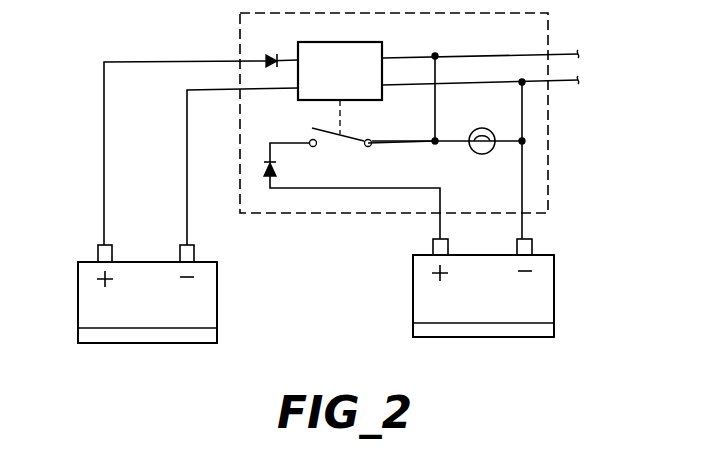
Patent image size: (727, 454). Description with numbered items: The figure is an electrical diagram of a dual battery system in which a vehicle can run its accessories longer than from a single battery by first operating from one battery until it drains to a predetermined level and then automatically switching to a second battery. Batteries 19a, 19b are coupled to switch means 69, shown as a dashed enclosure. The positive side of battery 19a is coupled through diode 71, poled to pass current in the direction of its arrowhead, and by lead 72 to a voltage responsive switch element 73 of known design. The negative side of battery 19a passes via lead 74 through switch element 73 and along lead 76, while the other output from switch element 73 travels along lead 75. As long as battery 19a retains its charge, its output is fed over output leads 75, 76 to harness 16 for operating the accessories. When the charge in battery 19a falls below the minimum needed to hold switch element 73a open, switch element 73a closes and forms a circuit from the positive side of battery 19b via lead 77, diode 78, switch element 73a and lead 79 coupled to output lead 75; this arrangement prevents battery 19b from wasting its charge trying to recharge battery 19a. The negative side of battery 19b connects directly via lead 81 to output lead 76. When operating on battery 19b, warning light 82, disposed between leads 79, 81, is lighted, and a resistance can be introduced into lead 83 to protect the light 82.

The harness 16 is at (620, 68).
The battery 19a is at (217, 312).
The battery 19b is at (554, 308).
The switch means 69 is at (335, 215).
The diode 71 is at (262, 54).
The lead 72 is at (104, 128).
The voltage responsive switch element 73 is at (352, 83).
The switch element 73a is at (340, 136).
The lead 74 is at (187, 155).
The output lead 75 is at (458, 55).
The output lead 76 is at (504, 80).
The lead 77 is at (437, 222).
The diode 78 is at (264, 170).
The lead 79 is at (406, 143).
The lead 81 is at (526, 223).
The warning light 82 is at (482, 128).
The lead 83 is at (466, 151).